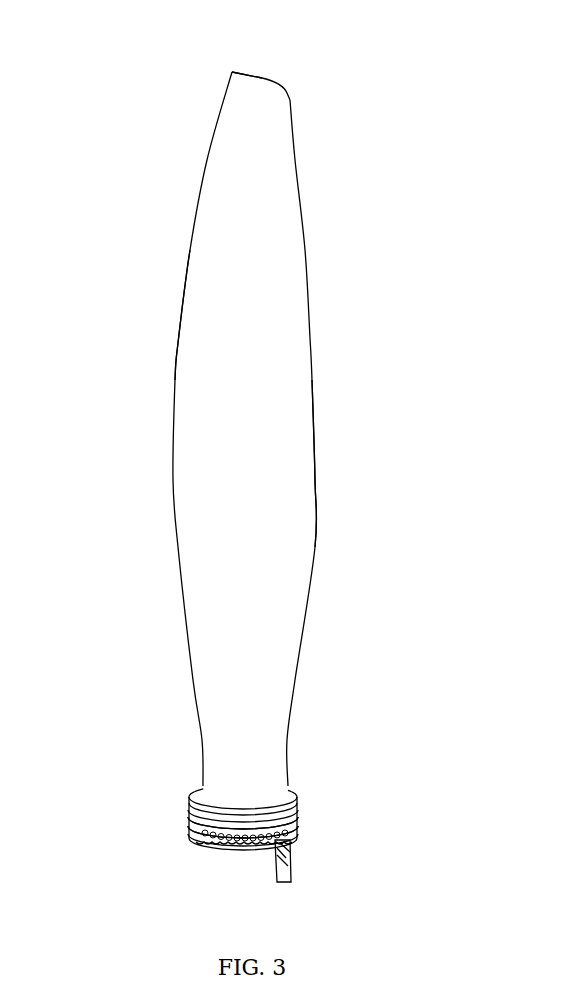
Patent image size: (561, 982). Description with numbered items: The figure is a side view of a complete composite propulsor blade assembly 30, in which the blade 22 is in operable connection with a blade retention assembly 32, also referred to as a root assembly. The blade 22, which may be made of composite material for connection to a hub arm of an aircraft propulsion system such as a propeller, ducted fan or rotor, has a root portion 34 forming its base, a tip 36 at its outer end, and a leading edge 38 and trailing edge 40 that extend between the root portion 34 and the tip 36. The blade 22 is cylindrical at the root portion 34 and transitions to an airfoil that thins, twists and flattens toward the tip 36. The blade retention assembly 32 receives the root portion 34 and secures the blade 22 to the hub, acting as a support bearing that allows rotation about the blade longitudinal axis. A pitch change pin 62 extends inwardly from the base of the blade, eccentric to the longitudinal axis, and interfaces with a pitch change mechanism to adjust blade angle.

The blade 22 is at (312, 337).
The blade assembly 30 is at (372, 152).
The blade retention assembly 32 is at (182, 814).
The root portion 34 is at (325, 772).
The tip 36 is at (262, 78).
The leading edge 38 is at (178, 343).
The trailing edge 40 is at (315, 482).
The pitch change pin 62 is at (295, 872).